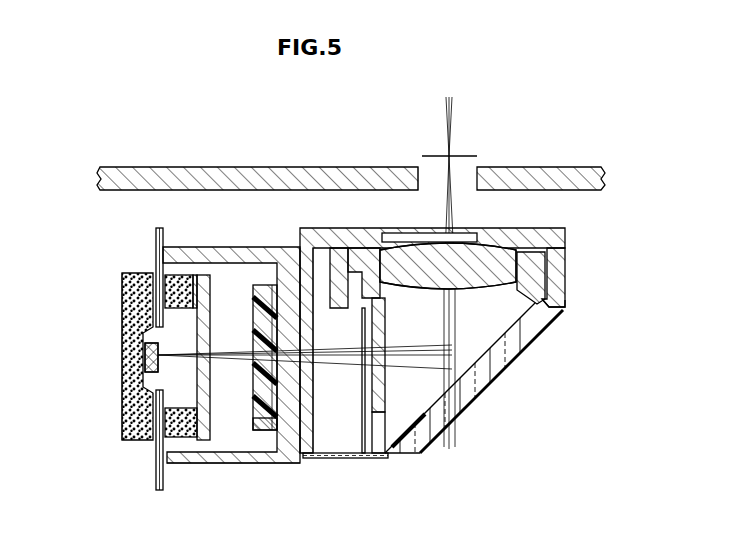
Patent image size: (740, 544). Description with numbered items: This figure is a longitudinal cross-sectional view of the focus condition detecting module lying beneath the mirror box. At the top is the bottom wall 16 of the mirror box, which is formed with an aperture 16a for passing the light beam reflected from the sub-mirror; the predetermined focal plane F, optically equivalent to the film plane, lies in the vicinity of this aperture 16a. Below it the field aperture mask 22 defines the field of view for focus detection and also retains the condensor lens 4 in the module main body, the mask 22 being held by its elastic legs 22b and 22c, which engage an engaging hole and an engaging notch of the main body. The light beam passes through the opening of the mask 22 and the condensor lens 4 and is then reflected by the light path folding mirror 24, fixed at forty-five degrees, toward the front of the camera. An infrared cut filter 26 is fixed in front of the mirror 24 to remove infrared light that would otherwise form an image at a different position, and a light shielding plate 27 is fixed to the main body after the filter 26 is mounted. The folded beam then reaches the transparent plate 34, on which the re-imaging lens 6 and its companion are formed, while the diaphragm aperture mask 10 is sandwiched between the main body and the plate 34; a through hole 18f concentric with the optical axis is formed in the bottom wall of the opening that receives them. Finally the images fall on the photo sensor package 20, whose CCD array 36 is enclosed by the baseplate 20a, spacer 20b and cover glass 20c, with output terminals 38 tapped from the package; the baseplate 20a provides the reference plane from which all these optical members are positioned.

The condensor lens 4 is at (518, 260).
The re-imaging lens 6 is at (253, 363).
The diaphragm aperture mask 10 is at (293, 460).
The bottom wall of the mirror box 16 is at (341, 180).
The aperture 16a is at (433, 182).
The through hole 18f is at (305, 380).
The photo sensor package 20 is at (122, 400).
The baseplate 20a is at (123, 307).
The spacer 20b is at (178, 280).
The cover glass 20c is at (210, 280).
The field aperture mask 22 is at (493, 233).
The elastic leg 22b is at (339, 350).
The elastic leg 22c is at (560, 310).
The light path folding mirror 24 is at (448, 387).
The infrared cut filter 26 is at (380, 405).
The light shielding plate 27 is at (332, 457).
The transparent plate 34 is at (253, 425).
The CCD array 36 is at (148, 360).
The output terminals 38 is at (155, 228).
The predetermined focal plane F is at (474, 154).